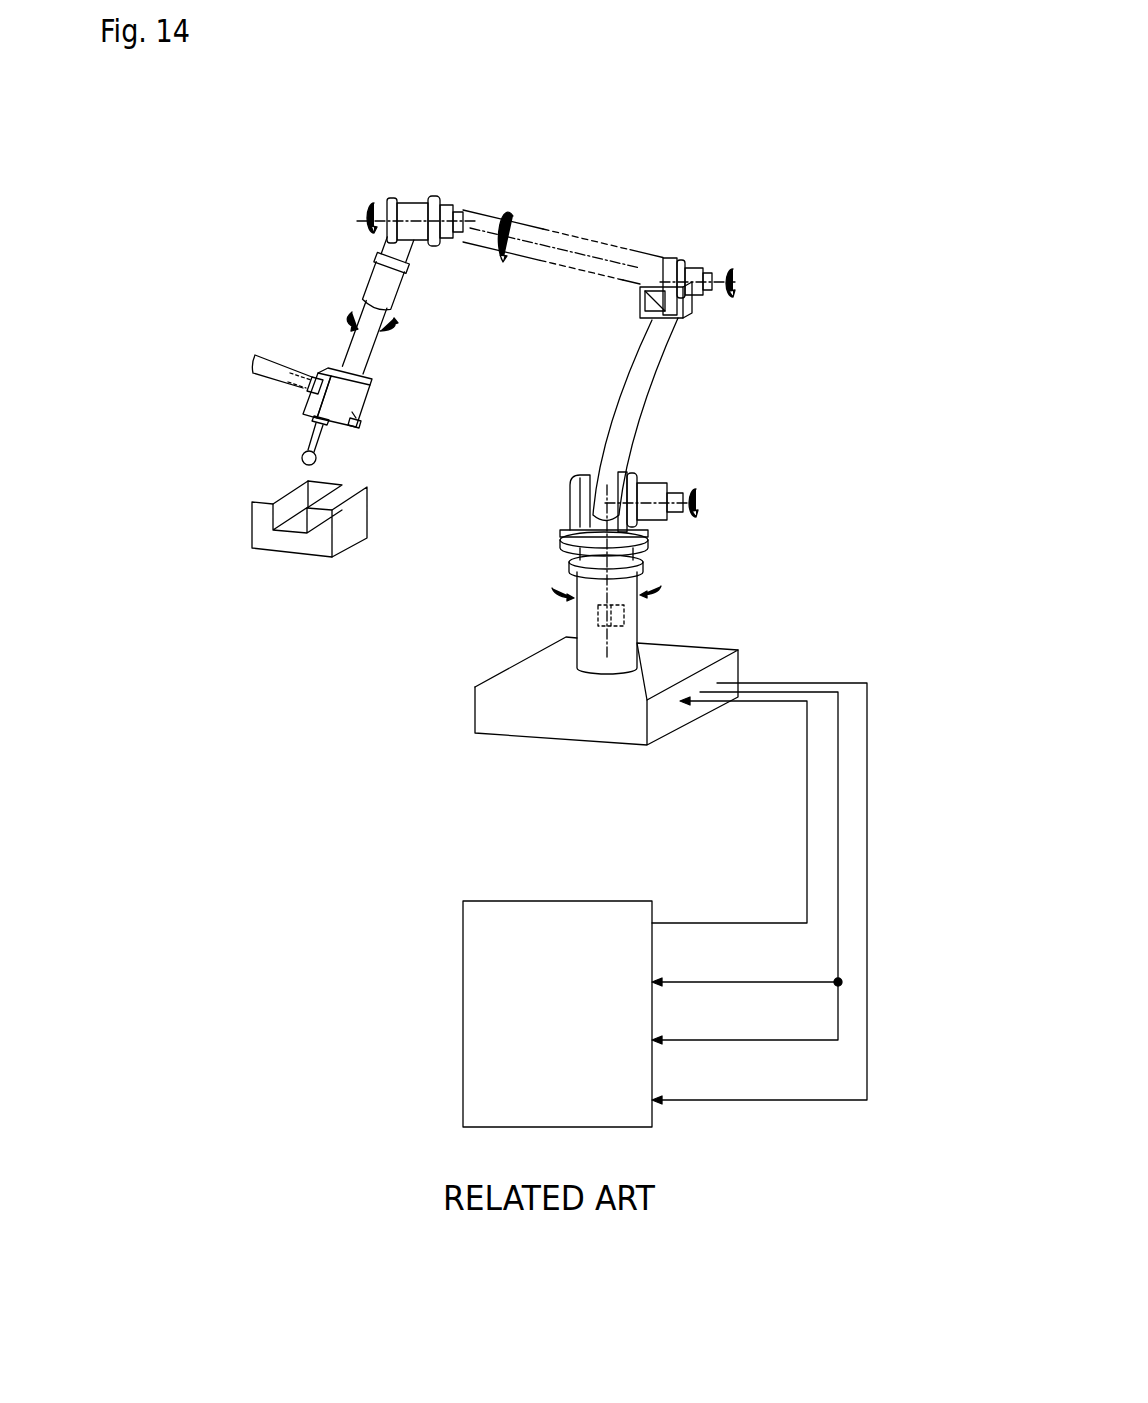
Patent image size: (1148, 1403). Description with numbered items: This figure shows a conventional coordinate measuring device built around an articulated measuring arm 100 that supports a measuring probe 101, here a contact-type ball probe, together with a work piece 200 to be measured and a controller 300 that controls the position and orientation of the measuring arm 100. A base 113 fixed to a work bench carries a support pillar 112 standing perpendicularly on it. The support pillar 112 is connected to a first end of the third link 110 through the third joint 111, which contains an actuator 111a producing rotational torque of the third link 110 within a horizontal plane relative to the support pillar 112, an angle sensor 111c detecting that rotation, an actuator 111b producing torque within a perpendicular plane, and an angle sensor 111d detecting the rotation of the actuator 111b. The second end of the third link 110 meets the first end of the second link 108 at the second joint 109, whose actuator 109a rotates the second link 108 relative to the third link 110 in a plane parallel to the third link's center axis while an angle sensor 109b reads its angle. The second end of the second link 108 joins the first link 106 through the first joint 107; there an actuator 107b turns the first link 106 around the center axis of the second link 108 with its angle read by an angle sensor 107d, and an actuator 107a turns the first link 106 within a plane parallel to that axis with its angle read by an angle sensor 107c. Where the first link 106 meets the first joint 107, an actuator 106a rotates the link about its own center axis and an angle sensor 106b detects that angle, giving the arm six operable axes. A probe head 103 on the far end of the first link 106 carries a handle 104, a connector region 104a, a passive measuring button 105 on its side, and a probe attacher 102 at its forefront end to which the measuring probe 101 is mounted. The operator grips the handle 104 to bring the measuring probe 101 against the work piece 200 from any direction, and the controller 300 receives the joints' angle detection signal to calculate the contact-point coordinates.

The measuring arm 100 is at (262, 275).
The measuring probe 101 is at (299, 454).
The probe attacher 102 is at (330, 430).
The probe head 103 is at (368, 398).
The handle 104 is at (256, 362).
The probe connector 104a is at (296, 393).
The passive measuring button 105 is at (366, 418).
The first link 106 is at (376, 343).
The actuator 106a is at (410, 259).
The angle sensor 106b is at (385, 232).
The first joint 107 is at (404, 198).
The actuator 107a is at (441, 205).
The actuator 107b is at (470, 216).
The angle sensor 107c is at (455, 200).
The angle sensor 107d is at (508, 213).
The second link 108 is at (528, 269).
The second joint 109 is at (667, 257).
The actuator 109a is at (701, 263).
The angle sensor 109b is at (713, 297).
The third link 110 is at (661, 397).
The third joint 111 is at (583, 470).
The actuator 111a is at (577, 603).
The actuator 111b is at (661, 477).
The angle sensor 111c is at (631, 617).
The angle sensor 111d is at (688, 523).
The support pillar 112 is at (577, 627).
The base 113 is at (463, 710).
The work piece 200 is at (370, 522).
The controller 300 is at (547, 900).